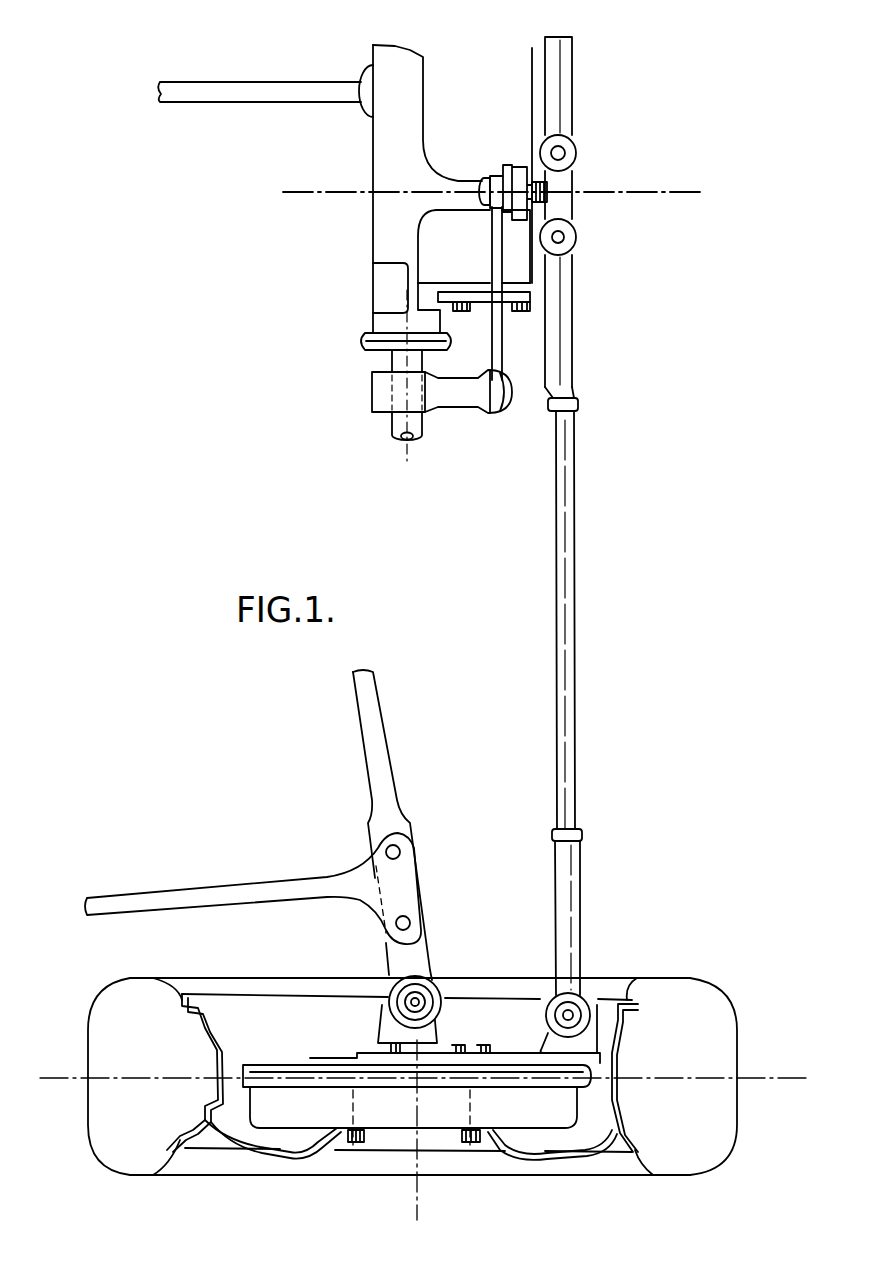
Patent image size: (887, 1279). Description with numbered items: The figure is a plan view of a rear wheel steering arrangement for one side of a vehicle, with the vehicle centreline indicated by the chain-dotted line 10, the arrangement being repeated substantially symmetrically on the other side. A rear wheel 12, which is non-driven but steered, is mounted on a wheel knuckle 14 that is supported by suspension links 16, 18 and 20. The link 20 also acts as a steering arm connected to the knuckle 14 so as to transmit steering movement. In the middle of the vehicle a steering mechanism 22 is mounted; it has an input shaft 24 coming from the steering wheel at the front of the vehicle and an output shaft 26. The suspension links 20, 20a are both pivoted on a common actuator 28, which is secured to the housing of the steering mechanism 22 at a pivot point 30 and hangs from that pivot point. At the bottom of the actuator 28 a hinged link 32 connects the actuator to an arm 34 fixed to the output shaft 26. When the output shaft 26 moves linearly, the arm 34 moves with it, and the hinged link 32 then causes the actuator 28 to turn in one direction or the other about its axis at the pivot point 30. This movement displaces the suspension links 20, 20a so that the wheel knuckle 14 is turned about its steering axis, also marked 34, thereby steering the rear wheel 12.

The centreline 10 is at (657, 192).
The rear wheel 12 is at (103, 980).
The wheel knuckle 14 is at (598, 1005).
The suspension link 16 is at (372, 720).
The suspension link 18 is at (183, 893).
The suspension link 20 is at (576, 600).
The suspension link 20a is at (563, 87).
The steering mechanism 22 is at (383, 230).
The input shaft 24 is at (247, 85).
The output shaft 26 is at (398, 426).
The actuator 28 is at (573, 208).
The pivot point 30 is at (512, 167).
The hinged link 32 is at (502, 344).
The arm 34 is at (452, 397).